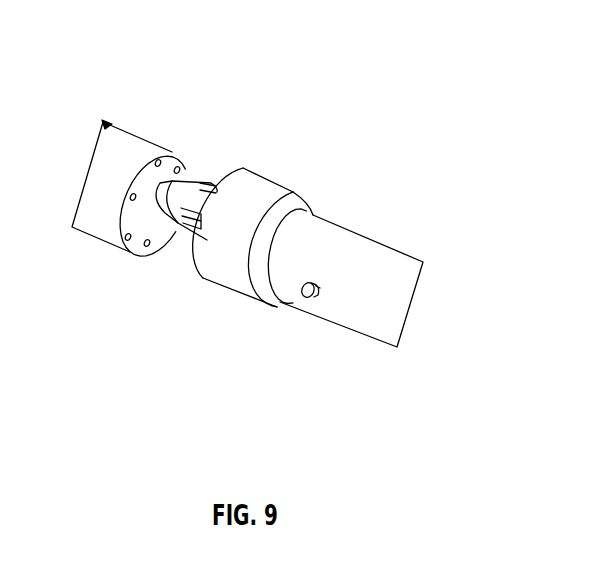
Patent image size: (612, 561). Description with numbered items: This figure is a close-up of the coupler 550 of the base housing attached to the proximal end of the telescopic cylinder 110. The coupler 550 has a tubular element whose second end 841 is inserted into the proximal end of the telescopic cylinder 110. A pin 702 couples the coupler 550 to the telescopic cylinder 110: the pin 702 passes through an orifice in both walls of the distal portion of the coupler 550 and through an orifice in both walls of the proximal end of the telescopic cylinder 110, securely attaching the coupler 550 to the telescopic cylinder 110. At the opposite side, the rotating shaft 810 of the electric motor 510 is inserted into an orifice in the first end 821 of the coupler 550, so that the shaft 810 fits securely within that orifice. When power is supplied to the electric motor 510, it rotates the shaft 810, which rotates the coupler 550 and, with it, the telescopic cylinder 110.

The telescopic cylinder 110 is at (370, 238).
The electric motor 510 is at (106, 203).
The coupler 550 is at (217, 243).
The pin 702 is at (307, 297).
The shaft 810 is at (165, 198).
The first end 821 is at (185, 193).
The second end 841 is at (330, 212).